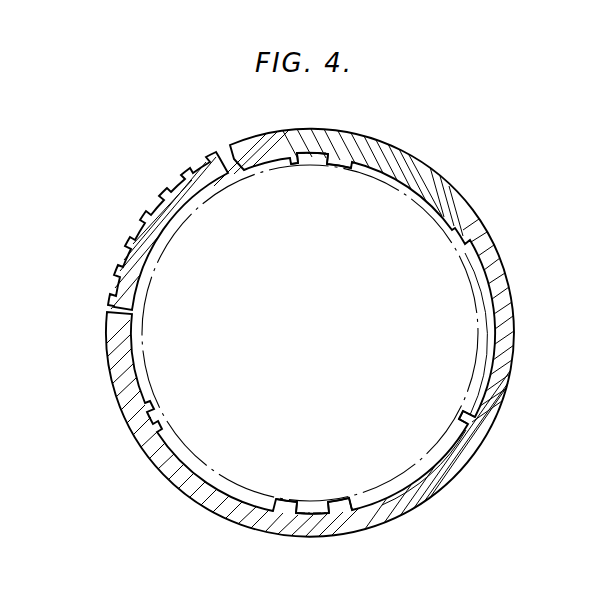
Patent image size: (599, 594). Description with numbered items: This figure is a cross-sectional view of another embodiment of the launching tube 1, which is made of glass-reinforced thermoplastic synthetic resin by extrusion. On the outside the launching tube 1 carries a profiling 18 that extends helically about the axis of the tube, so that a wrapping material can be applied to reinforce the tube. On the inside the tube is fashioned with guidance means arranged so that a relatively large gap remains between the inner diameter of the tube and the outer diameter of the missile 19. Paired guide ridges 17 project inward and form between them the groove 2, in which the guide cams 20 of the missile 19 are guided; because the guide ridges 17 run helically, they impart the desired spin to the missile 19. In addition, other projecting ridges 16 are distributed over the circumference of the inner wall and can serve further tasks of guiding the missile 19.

The launching tube 1 is at (458, 213).
The groove 2 is at (300, 515).
The projecting ridges 16 is at (467, 430).
The guide ridges 17 is at (345, 512).
The profiling 18 is at (138, 221).
The missile 19 is at (463, 362).
The guide cams 20 is at (312, 165).